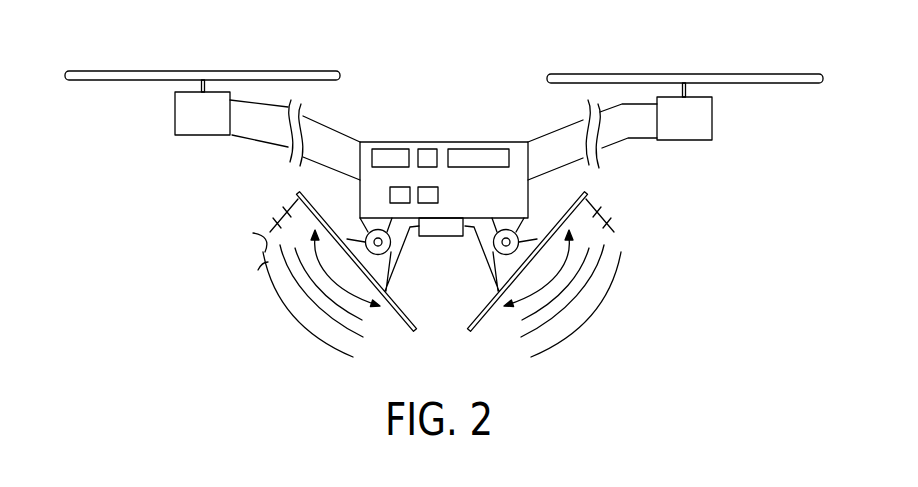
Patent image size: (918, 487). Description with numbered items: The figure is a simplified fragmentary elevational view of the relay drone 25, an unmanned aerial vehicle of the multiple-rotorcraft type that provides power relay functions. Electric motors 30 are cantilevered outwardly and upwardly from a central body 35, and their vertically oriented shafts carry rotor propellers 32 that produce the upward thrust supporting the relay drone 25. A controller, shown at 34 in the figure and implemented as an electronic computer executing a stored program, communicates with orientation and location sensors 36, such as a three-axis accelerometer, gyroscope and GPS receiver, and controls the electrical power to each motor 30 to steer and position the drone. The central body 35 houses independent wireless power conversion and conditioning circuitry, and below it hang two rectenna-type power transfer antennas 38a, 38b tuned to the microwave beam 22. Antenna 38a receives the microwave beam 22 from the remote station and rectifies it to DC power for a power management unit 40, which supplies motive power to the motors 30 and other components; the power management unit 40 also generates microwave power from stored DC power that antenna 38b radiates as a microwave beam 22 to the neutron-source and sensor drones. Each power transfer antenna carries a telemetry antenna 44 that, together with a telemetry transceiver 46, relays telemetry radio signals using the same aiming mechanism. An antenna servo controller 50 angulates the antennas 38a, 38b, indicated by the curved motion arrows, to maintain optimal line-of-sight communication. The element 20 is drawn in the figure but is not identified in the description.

The ground surface 20 is at (258, 270).
The microwave beam 22 is at (313, 305).
The relay drone 25 is at (482, 60).
The electric motors 30 is at (175, 123).
The rotor propellers 32 is at (203, 71).
The processor 34 is at (390, 148).
The central body 35 is at (510, 142).
The orientation and location sensors 36 is at (424, 148).
The power transfer antenna 38a is at (402, 316).
The power transfer antenna 38b is at (470, 318).
The power management unit 40 is at (478, 148).
The telemetry antenna 44 is at (274, 228).
The telemetry transceiver 46 is at (388, 193).
The antenna servo controller 50 is at (455, 237).